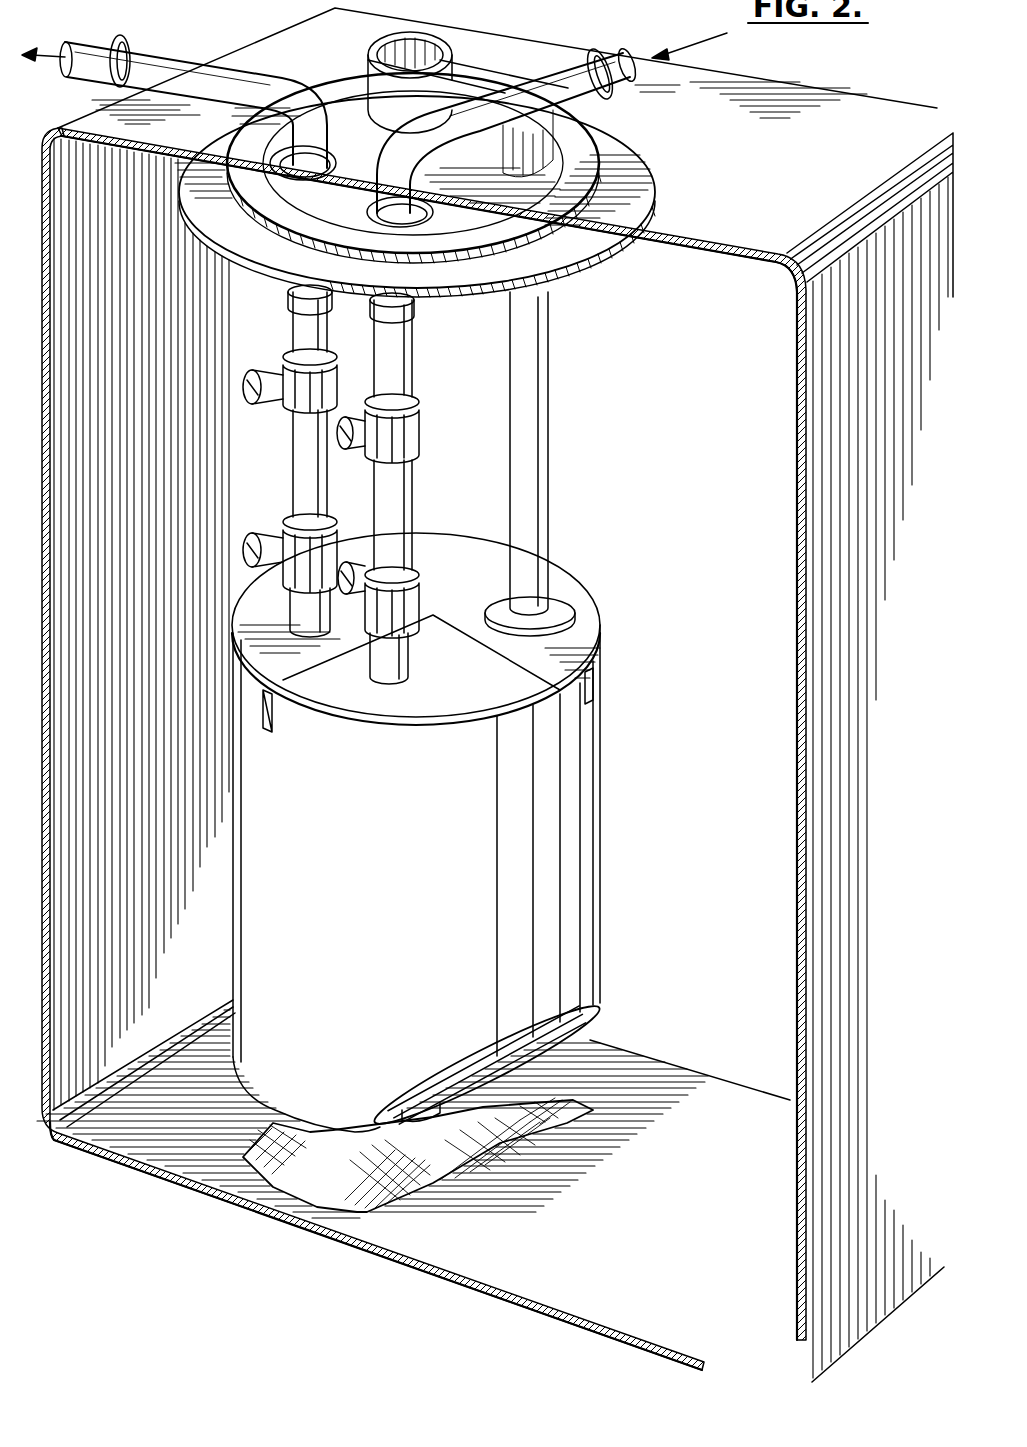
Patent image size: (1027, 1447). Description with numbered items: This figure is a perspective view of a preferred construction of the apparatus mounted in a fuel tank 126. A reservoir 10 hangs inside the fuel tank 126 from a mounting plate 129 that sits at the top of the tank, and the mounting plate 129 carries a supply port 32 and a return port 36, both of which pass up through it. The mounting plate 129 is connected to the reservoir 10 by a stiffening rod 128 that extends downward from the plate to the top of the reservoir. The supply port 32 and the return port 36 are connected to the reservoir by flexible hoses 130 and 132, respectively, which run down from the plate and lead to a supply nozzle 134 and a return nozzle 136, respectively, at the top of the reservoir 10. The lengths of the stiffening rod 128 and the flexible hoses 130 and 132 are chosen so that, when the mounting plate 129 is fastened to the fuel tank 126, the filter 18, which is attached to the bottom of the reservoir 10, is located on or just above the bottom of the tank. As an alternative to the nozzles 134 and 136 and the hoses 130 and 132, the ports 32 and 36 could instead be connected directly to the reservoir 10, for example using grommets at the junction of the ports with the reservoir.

The reservoir 10 is at (587, 817).
The filter 18 is at (563, 1113).
The supply port 32 is at (157, 62).
The return port 36 is at (543, 85).
The fuel tank 126 is at (160, 1152).
The stiffening rod 128 is at (530, 463).
The mounting plate 129 is at (627, 158).
The flexible hose 130 is at (300, 462).
The flexible hose 132 is at (397, 473).
The supply nozzle 134 is at (300, 604).
The return nozzle 136 is at (397, 656).